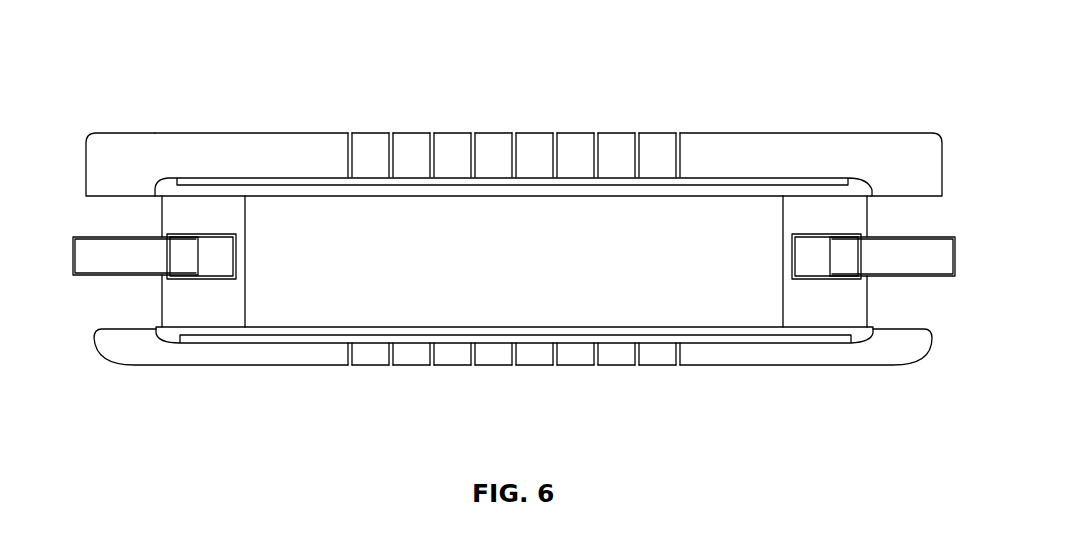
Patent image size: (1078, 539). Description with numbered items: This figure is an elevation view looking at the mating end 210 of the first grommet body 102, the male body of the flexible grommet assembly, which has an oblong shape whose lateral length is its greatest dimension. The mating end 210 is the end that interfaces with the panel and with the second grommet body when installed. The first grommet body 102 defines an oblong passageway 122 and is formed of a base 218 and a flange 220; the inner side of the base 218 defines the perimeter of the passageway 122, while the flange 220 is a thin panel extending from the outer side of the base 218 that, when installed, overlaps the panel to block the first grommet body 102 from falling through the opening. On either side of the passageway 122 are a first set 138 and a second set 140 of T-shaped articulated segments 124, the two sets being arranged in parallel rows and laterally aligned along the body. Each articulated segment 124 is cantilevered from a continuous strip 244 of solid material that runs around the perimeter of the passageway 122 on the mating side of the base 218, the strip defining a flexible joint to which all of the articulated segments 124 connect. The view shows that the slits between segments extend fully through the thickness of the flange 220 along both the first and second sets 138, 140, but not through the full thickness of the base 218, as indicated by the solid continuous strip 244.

The first grommet body 102 is at (112, 93).
The passageway 122 is at (683, 217).
The articulated segments 124 is at (380, 153).
The first set of articulated segments 138 is at (342, 156).
The second set of articulated segments 140 is at (333, 350).
The mating end 210 is at (105, 172).
The base 218 is at (230, 210).
The flange 220 is at (173, 147).
The continuous strip 244 is at (415, 187).